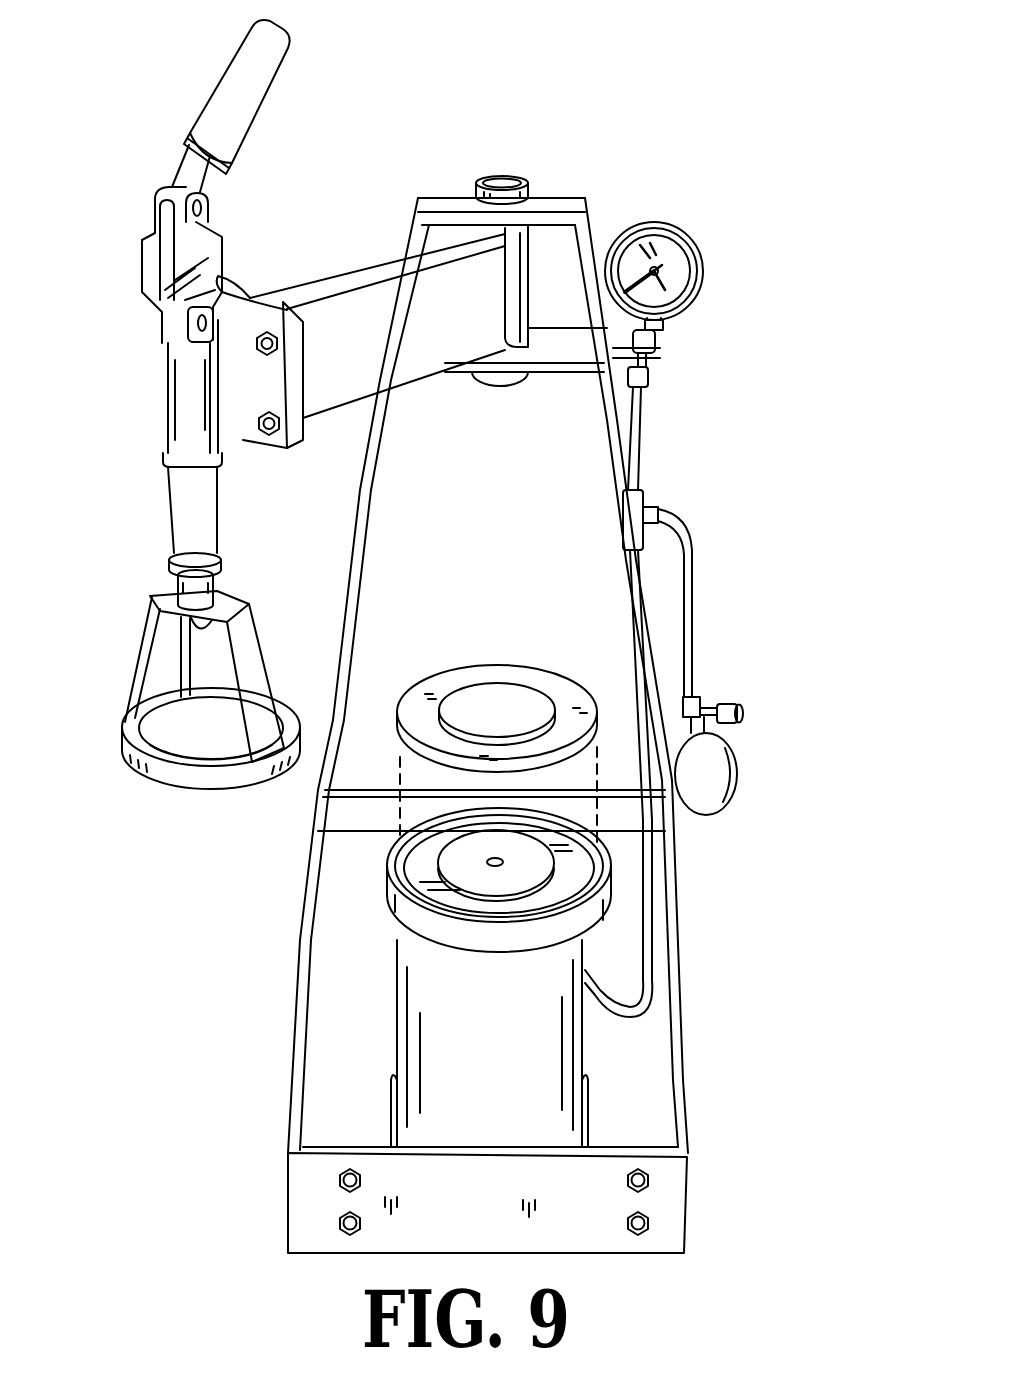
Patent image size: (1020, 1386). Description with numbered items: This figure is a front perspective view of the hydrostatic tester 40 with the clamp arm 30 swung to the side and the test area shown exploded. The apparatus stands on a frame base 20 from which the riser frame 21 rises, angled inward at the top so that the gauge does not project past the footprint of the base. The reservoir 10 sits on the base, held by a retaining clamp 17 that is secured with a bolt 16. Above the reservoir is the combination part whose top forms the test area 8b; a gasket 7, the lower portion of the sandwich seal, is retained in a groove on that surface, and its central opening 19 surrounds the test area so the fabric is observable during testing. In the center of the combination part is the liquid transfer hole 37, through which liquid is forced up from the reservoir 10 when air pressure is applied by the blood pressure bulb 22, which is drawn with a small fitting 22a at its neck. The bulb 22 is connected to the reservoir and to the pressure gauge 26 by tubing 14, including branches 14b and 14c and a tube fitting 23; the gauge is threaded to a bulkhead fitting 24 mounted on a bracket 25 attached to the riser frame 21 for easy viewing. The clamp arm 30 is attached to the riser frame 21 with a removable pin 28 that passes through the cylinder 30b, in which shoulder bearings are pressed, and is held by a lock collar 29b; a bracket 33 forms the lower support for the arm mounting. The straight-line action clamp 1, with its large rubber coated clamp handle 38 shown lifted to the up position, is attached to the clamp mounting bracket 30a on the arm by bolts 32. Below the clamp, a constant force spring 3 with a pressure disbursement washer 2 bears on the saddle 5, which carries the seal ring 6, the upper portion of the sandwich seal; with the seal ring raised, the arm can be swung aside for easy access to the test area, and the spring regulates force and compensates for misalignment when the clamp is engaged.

The straight-line action clamp 1 is at (210, 175).
The pressure disbursement washer 2 is at (176, 563).
The constant force spring 3 is at (225, 584).
The saddle 5 is at (255, 643).
The seal ring 6 is at (153, 777).
The gasket 7 is at (448, 680).
The test area 8b is at (387, 905).
The reservoir 10 is at (413, 1030).
The tubing 14 is at (612, 1003).
The conduit branch 14b is at (693, 620).
The gauge conduit 14c is at (640, 440).
The bolt 16 is at (628, 1180).
The retaining clamp 17 is at (588, 1142).
The central opening 19 is at (508, 705).
The frame base 20 is at (688, 1043).
The riser frame 21 is at (362, 497).
The blood pressure bulb 22 is at (725, 795).
The valve 22a is at (747, 710).
The tube fitting 23 is at (648, 497).
The bulkhead fitting 24 is at (656, 330).
The bracket 25 is at (658, 356).
The pressure gauge 26 is at (703, 266).
The removable pin 28 is at (502, 180).
The lock collar 29b is at (527, 190).
The clamp arm 30 is at (352, 272).
The clamp mounting bracket 30a is at (303, 352).
The cylinder 30b is at (511, 274).
The bolts 32 is at (252, 362).
The bracket 33 is at (575, 345).
The liquid transfer hole 37 is at (490, 860).
The clamp handle 38 is at (276, 72).
The hydrostatic tester 40 is at (366, 206).